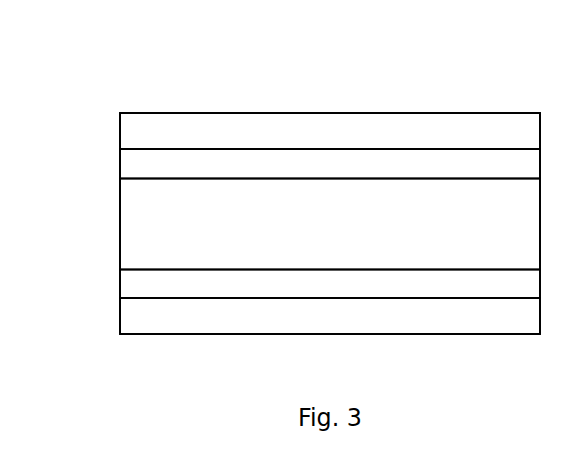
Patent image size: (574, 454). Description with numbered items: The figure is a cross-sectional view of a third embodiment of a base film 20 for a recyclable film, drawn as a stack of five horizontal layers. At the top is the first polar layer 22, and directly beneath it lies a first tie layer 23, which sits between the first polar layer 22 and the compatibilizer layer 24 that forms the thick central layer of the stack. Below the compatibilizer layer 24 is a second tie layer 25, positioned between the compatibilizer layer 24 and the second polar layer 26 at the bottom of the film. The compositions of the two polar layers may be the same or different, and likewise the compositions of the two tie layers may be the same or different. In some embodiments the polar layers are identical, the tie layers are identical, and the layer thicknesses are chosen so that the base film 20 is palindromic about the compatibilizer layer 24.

The base film 20 is at (437, 61).
The first polar layer 22 is at (133, 129).
The first tie layer 23 is at (133, 168).
The compatibilizer layer 24 is at (135, 223).
The second tie layer 25 is at (135, 283).
The second polar layer 26 is at (135, 315).